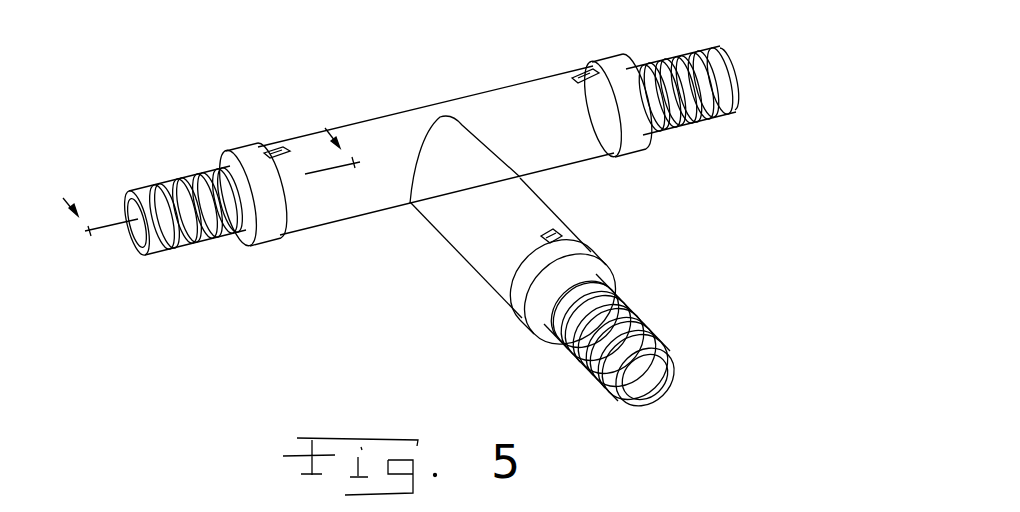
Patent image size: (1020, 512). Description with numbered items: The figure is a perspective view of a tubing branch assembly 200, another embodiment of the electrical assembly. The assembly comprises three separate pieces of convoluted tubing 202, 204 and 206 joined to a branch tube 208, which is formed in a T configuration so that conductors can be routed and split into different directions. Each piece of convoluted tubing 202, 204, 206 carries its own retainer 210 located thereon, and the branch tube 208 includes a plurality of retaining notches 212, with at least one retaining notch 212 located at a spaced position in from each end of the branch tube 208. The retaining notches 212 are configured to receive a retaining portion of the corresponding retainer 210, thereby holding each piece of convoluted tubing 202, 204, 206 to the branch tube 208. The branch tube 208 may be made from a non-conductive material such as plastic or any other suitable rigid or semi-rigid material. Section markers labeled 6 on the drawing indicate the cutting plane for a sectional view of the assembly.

The tubing branch assembly 200 is at (246, 32).
The convoluted tubing 202 is at (184, 180).
The convoluted tubing 204 is at (650, 323).
The convoluted tubing 206 is at (686, 45).
The branch tube 208 is at (505, 82).
The retainer 210 is at (251, 245).
The retaining notch 212 is at (543, 235).
The section line for FIG. 6 is at (204, 171).